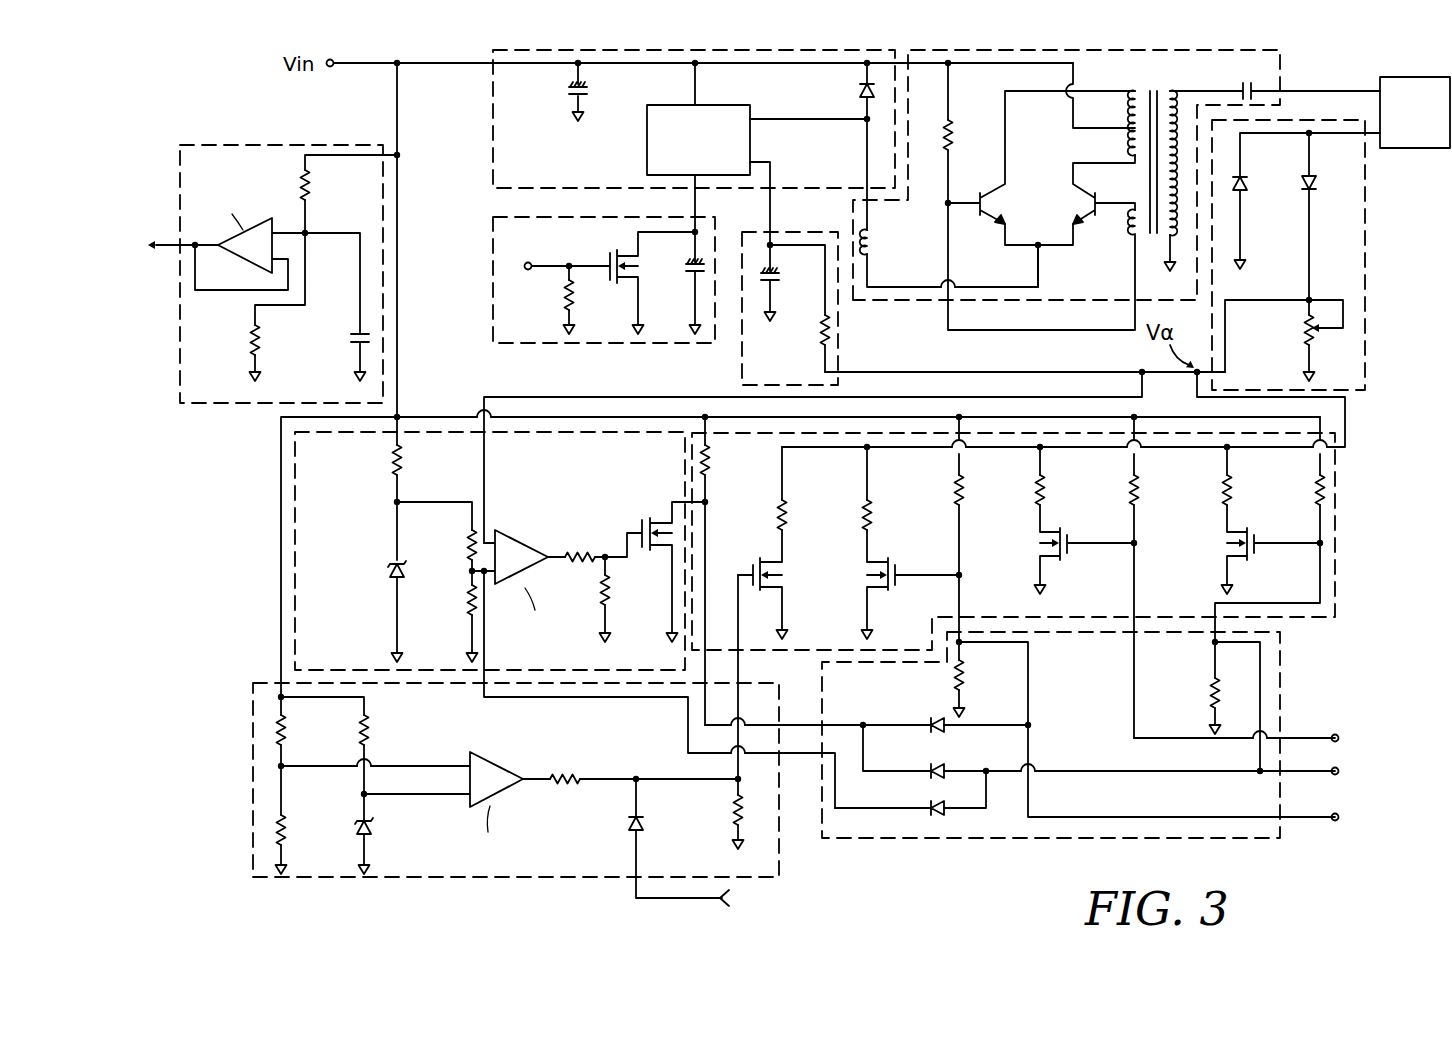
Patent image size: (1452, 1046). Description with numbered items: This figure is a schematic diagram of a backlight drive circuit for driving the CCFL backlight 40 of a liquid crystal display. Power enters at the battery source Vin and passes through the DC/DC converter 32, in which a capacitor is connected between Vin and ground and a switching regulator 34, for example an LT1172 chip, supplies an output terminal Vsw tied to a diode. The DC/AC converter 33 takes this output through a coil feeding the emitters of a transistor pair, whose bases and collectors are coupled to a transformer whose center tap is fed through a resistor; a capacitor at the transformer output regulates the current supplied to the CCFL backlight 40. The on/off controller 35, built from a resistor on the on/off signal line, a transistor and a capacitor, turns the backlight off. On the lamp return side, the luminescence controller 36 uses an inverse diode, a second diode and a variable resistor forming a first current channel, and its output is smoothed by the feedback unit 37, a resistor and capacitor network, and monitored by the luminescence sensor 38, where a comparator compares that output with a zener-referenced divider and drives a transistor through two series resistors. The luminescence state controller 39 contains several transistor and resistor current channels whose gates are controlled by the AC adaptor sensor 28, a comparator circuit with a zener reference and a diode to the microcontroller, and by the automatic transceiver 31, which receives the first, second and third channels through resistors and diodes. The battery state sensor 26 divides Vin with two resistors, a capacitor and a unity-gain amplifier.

The battery state sensor 26 is at (200, 404).
The AC adaptor sensor 28 is at (779, 866).
The automatic transceiver 31 is at (1280, 690).
The DC/DC converter 32 is at (733, 168).
The DC/AC converter 33 is at (1280, 70).
The switching regulator 34 is at (647, 148).
The on/off controller 35 is at (493, 275).
The luminescence controller 36 is at (1365, 298).
The feedback unit 37 is at (742, 362).
The luminescence sensor 38 is at (445, 432).
The luminescence state controller 39 is at (1335, 540).
The CCFL backlight 40 is at (1418, 150).